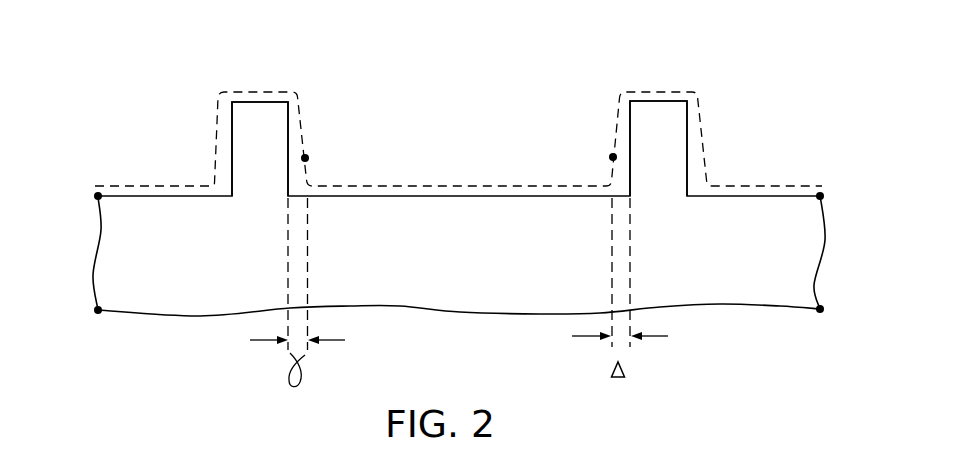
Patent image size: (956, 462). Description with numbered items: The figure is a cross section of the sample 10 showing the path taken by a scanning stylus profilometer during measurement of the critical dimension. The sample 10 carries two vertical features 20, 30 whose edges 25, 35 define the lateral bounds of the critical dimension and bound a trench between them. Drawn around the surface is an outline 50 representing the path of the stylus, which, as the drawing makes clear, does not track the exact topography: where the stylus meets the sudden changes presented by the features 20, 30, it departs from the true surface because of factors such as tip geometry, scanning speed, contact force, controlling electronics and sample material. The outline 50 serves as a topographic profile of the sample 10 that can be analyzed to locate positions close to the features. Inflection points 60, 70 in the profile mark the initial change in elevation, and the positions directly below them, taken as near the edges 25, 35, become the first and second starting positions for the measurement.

The sample 10 is at (778, 224).
The feature 20 is at (278, 110).
The feature 30 is at (678, 110).
The edge 25 is at (280, 207).
The edge 35 is at (640, 207).
The outline 50 is at (805, 168).
The inflection point 60 is at (323, 143).
The inflection point 70 is at (596, 143).